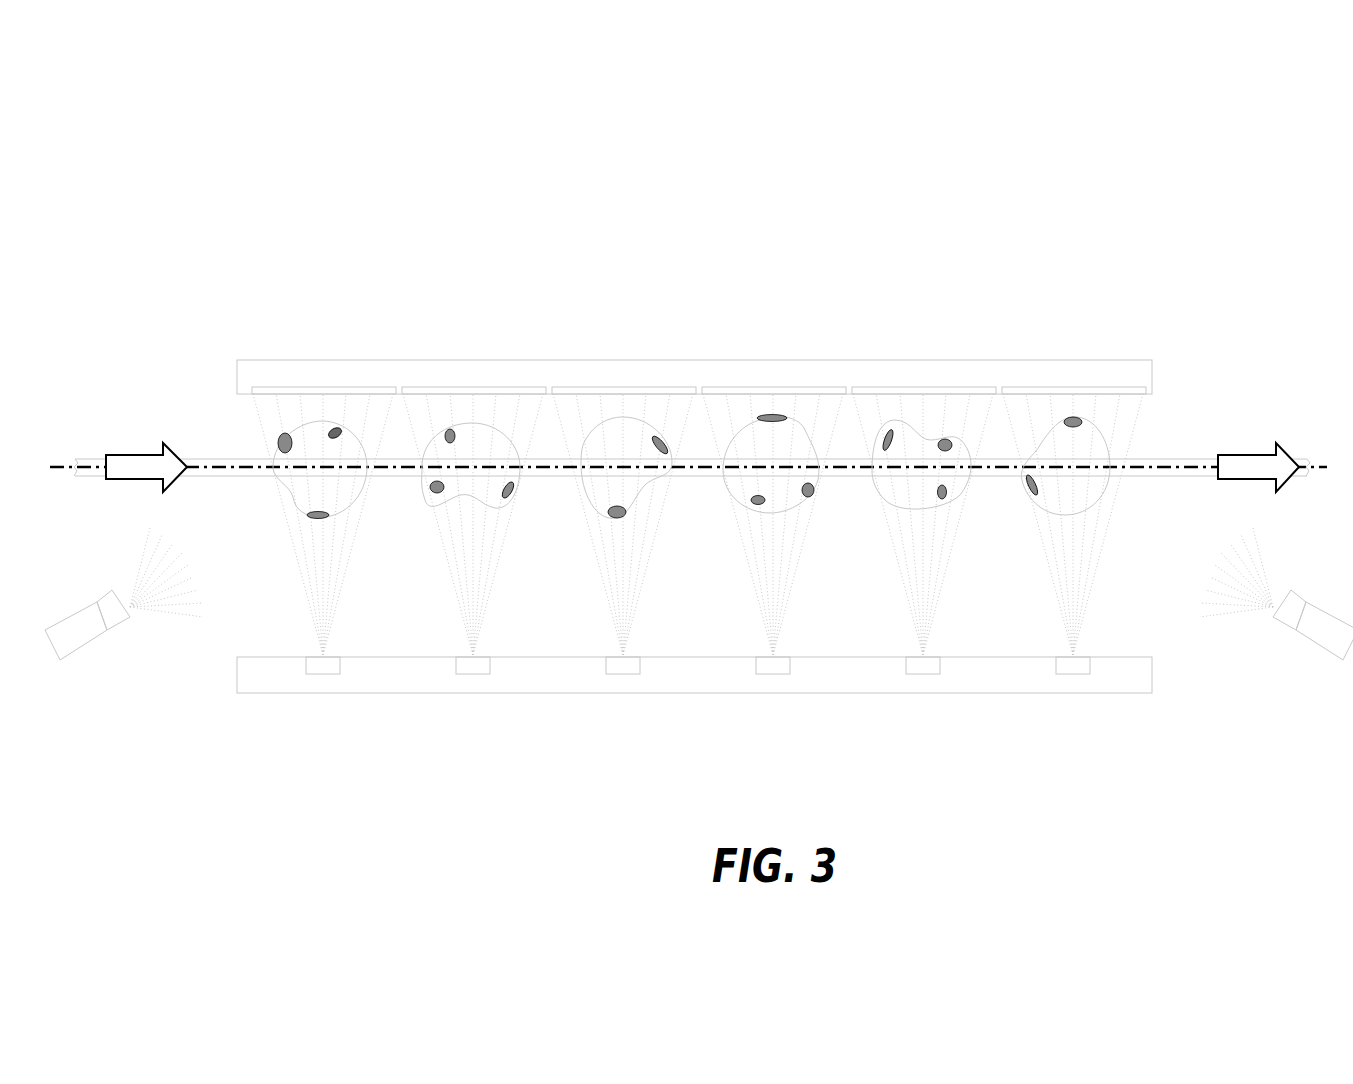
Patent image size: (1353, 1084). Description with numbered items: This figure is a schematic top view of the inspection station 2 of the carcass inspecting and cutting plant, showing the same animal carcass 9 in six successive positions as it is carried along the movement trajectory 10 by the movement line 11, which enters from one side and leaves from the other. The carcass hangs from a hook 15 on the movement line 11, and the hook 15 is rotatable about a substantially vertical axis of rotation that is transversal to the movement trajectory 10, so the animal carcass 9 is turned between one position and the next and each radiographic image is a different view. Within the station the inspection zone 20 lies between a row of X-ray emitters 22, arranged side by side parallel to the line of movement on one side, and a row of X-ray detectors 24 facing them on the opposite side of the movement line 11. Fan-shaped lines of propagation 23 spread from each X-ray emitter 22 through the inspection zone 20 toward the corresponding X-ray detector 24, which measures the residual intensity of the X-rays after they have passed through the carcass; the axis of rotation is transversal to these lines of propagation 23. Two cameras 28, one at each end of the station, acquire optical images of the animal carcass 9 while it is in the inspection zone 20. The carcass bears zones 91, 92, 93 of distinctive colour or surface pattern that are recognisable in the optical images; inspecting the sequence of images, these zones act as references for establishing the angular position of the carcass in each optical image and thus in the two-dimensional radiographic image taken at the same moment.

The inspection station 2 is at (890, 220).
The animal carcass 9 is at (300, 432).
The movement trajectory 10 is at (83, 460).
The movement line 11 is at (1185, 463).
The hook 15 is at (322, 465).
The inspection zone 20 is at (857, 612).
The X-ray emitter 22 is at (618, 670).
The lines of propagation 23 is at (657, 542).
The X-ray detector 24 is at (802, 390).
The camera 28 is at (90, 625).
The zone 91 is at (335, 430).
The zone 92 is at (276, 443).
The zone 93 is at (320, 517).